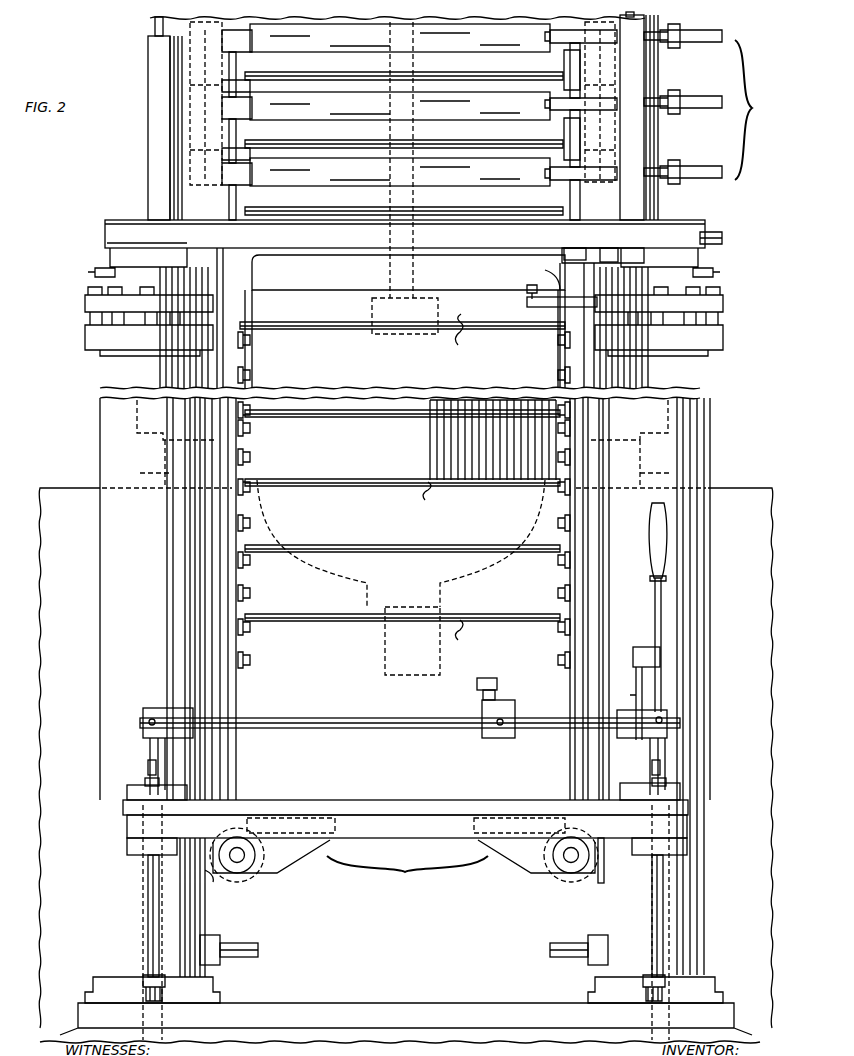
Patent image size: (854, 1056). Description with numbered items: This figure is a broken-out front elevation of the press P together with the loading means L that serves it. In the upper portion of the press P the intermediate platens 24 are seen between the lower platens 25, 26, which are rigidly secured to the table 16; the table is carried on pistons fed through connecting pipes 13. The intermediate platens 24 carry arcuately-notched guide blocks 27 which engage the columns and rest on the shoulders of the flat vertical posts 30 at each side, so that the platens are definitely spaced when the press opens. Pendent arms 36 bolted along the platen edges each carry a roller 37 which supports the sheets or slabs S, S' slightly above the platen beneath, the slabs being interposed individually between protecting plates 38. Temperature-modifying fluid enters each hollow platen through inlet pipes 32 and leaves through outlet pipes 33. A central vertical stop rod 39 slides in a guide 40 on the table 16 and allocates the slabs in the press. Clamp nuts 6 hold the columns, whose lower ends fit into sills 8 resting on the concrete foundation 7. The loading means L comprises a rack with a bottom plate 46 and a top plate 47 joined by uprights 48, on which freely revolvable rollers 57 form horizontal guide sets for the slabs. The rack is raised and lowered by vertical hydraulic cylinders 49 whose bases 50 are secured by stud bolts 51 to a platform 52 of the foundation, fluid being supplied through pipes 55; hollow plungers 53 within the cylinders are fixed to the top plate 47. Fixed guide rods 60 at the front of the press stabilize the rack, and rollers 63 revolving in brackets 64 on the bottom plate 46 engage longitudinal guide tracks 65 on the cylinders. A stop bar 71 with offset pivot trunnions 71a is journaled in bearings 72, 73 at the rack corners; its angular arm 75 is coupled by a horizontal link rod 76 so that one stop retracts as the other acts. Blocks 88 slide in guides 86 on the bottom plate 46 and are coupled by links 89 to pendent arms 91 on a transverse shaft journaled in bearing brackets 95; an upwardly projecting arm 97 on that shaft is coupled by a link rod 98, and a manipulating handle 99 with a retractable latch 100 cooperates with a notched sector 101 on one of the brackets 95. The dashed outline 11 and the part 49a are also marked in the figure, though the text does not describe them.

The guide rods 60 is at (158, 60).
The flat vertical posts 30 is at (190, 140).
The guide blocks 27 is at (402, 118).
The pendent arms 36 is at (255, 39).
The roller 37 is at (250, 85).
The intermediate platens 24 is at (400, 105).
The sheets or slabs S' is at (404, 136).
The outlet pipes 33 is at (548, 38).
The inlet pipes 32 is at (710, 42).
The press P is at (748, 110).
The lower platen 25 is at (405, 234).
The top plate 47 is at (405, 233).
The pivot trunnions 71a is at (578, 248).
The bearings 73 is at (606, 262).
The hollow plungers 53 is at (128, 272).
The bearing plate 49a is at (95, 341).
The horizontal link rod 76 is at (528, 288).
The angular arm 75 is at (552, 285).
The stop bar 71 is at (540, 320).
The lower platen 26 is at (408, 272).
The vertical stop rod 39 is at (415, 270).
The guide 40 is at (372, 313).
The rollers 57 is at (250, 375).
The table 16 is at (405, 339).
The sheets or slabs S is at (402, 499).
The protecting plates 38 is at (436, 487).
The clamp nuts 6 is at (135, 415).
The sills 8 is at (140, 470).
The concrete foundation 7 is at (50, 488).
The vertical hydraulic cylinders 49 is at (107, 600).
The uprights 48 is at (232, 512).
The longitudinal guide tracks 65 is at (210, 552).
The manipulating handle 99 is at (652, 518).
The retractable latch 100 is at (650, 647).
The sector 101 is at (636, 675).
The bearing brackets 95 is at (170, 708).
The pendent arms 91 is at (150, 745).
The links 89 is at (148, 757).
The blocks 88 is at (145, 775).
The guides 86 is at (127, 798).
The upwardly projecting arm 97 is at (482, 697).
The link rod 98 is at (496, 678).
The bottom plate 46 is at (405, 800).
The brackets 64 is at (280, 858).
The rollers 63 is at (245, 875).
The loading means L is at (407, 874).
The bearings 72 is at (604, 850).
The bases 50 is at (148, 903).
The pipes 55 is at (244, 958).
The stud bolts 51 is at (146, 1000).
The platform 52 is at (374, 1040).
The hopper 11 is at (490, 575).
The connecting pipes 13 is at (385, 668).